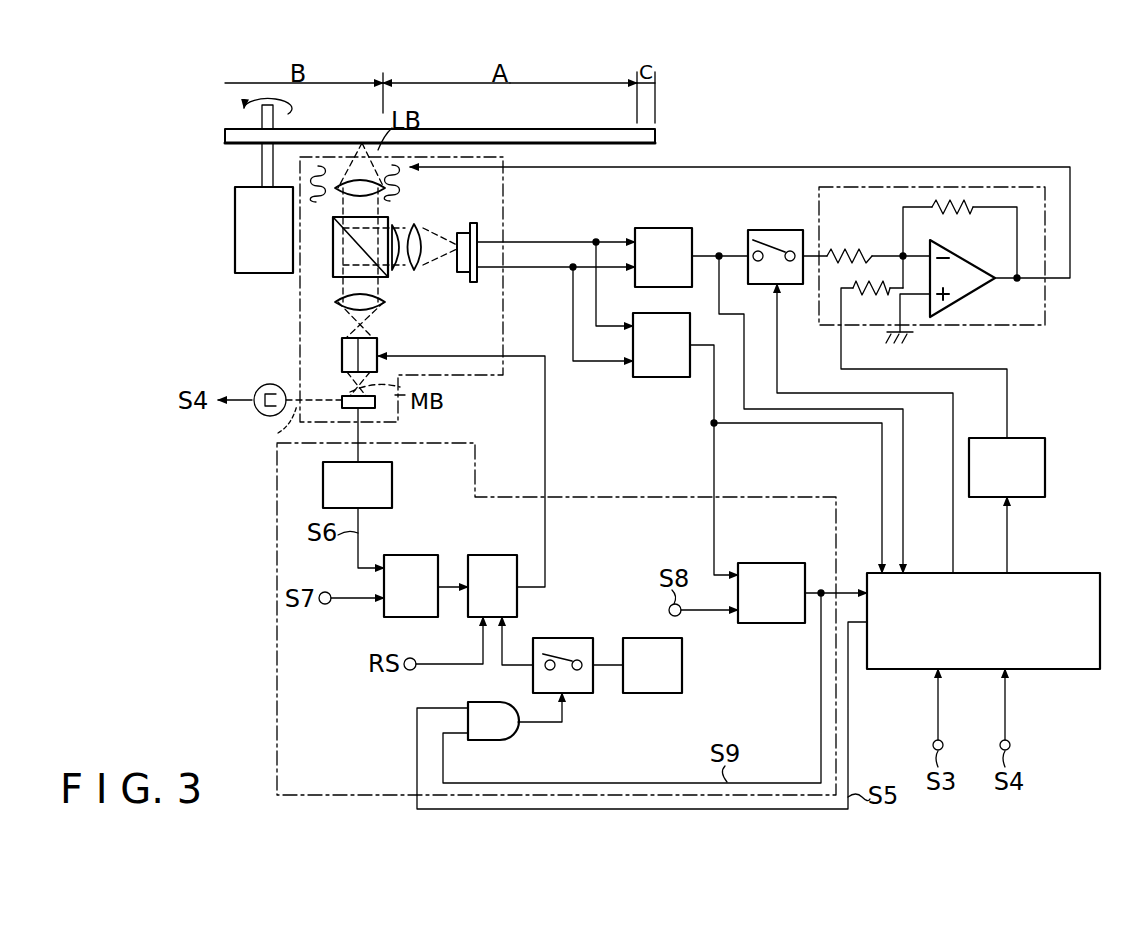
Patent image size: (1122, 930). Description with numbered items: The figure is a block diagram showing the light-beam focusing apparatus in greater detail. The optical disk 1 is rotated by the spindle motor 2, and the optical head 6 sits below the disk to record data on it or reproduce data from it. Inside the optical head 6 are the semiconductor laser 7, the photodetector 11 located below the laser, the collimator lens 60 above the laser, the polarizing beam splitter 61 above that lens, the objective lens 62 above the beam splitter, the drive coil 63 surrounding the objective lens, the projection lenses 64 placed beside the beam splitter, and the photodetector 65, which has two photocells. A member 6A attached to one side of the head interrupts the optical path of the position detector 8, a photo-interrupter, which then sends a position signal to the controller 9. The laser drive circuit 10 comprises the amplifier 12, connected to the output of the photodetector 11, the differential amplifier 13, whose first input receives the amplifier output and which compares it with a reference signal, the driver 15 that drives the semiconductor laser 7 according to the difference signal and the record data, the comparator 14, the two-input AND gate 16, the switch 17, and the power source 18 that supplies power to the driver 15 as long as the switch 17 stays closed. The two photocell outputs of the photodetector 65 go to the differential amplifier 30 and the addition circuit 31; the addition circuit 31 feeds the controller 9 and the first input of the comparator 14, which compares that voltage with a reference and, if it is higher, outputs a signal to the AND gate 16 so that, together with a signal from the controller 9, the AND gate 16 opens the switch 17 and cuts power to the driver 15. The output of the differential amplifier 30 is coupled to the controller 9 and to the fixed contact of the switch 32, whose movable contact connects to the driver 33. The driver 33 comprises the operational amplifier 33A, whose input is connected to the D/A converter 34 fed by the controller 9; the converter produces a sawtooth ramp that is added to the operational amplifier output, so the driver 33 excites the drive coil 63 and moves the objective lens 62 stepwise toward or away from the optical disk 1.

The optical disk 1 is at (655, 138).
The spindle motor 2 is at (235, 235).
The optical head 6 is at (503, 172).
The member 6A is at (270, 427).
The semiconductor laser 7 is at (342, 356).
The position detector 8 is at (270, 384).
The controller 9 is at (1054, 573).
The laser drive circuit 10 is at (276, 655).
The photodetector 11 is at (342, 402).
The amplifier 12 is at (392, 485).
The differential amplifier 13 is at (410, 555).
The comparator 14 is at (770, 623).
The driver 15 is at (491, 555).
The two-input AND gate 16 is at (506, 740).
The switch 17 is at (564, 638).
The power source 18 is at (682, 670).
The differential amplifier 30 is at (662, 228).
The addition circuit 31 is at (656, 378).
The switch 32 is at (775, 230).
The driver 33 is at (955, 265).
The operational amplifier 33A is at (966, 261).
The D/A converter 34 is at (1045, 466).
The collimator lens 60 is at (380, 306).
The polarizing beam splitter 61 is at (333, 270).
The objective lens 62 is at (333, 205).
The drive coil 63 is at (400, 200).
The projection lenses 64 is at (405, 275).
The photodetector 65 is at (470, 223).